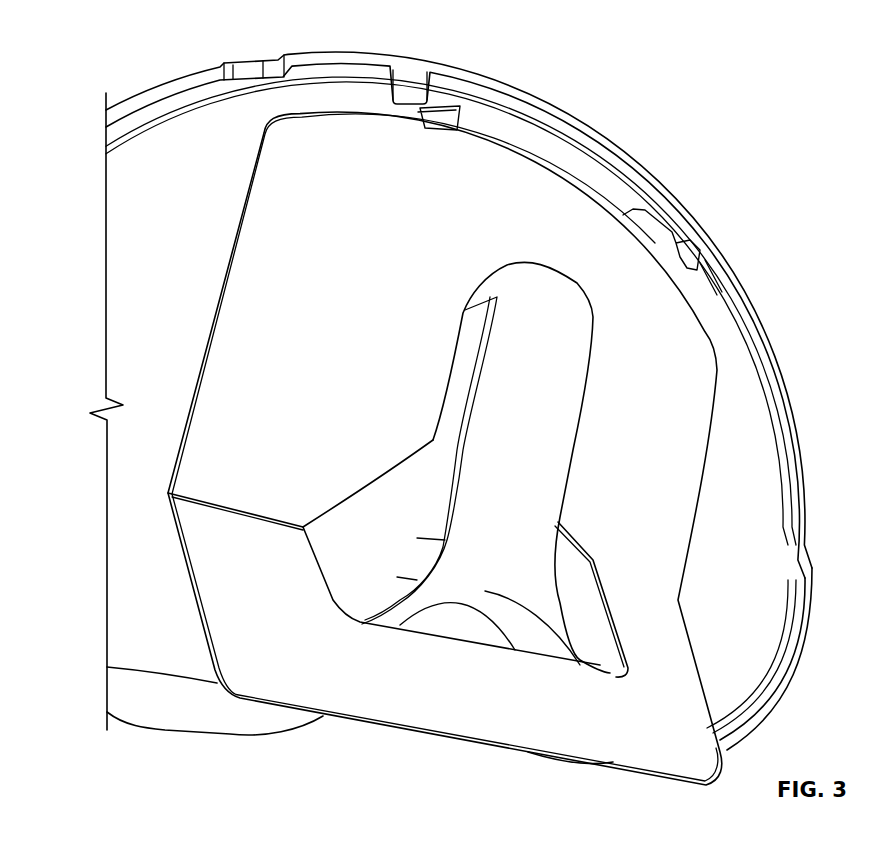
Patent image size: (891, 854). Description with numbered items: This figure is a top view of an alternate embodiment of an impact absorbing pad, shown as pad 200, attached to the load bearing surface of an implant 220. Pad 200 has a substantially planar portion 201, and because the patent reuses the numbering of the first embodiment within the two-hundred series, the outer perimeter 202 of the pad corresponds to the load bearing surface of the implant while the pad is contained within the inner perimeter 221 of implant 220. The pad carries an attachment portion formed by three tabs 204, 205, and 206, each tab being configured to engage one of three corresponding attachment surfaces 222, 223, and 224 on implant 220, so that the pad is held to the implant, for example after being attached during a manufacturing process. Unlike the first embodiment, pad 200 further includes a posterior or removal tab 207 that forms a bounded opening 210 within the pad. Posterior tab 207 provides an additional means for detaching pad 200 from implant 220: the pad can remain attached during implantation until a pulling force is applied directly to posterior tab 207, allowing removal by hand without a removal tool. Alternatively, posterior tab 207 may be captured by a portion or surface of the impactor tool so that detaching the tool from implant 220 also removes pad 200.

The impact absorbing pad 200 is at (198, 253).
The substantially planar portion 201 is at (222, 415).
The mounting panel 202 is at (247, 183).
The tab 204 is at (450, 105).
The tab 205 is at (705, 281).
The tab 206 is at (577, 282).
The posterior tab 207 is at (610, 757).
The bounded opening 210 is at (563, 583).
The implant 220 is at (803, 397).
The rim step 221 is at (793, 653).
The attachment surface 222 is at (417, 88).
The attachment surface 223 is at (690, 250).
The attachment surface 224 is at (541, 297).